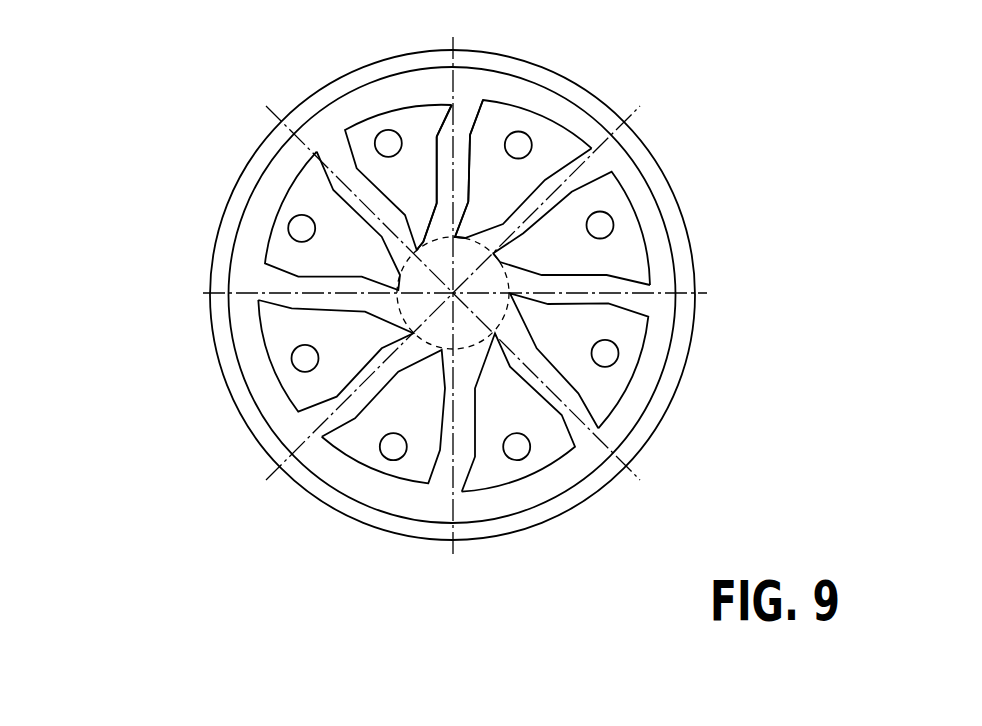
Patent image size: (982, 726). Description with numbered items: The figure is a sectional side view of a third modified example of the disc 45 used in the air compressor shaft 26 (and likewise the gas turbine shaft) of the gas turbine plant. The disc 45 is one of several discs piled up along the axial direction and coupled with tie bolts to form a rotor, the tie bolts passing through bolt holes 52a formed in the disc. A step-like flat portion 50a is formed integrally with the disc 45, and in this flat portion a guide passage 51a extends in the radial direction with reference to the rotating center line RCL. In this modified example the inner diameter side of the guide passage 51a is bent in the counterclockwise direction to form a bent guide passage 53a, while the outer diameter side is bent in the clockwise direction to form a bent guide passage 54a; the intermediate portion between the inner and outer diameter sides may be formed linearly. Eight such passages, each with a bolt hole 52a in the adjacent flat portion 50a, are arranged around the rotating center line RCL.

The air compressor shaft 26 is at (332, 70).
The disc 45 is at (390, 535).
The step-like flat portion 50a is at (628, 263).
The guide passage 51a is at (462, 173).
The bolt hole 52a is at (608, 217).
The bent guide passage 53a is at (463, 212).
The bent guide passage 54a is at (470, 110).
The rotating center line RCL is at (707, 295).